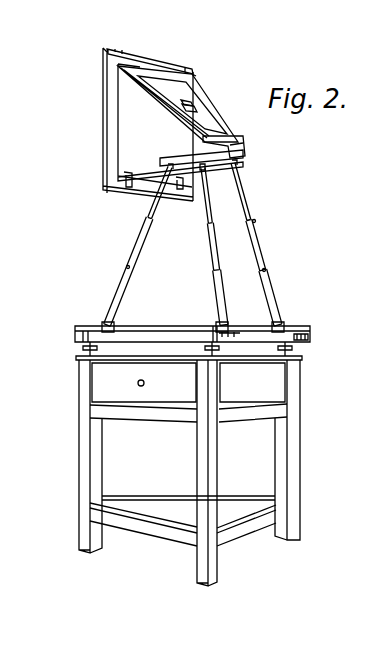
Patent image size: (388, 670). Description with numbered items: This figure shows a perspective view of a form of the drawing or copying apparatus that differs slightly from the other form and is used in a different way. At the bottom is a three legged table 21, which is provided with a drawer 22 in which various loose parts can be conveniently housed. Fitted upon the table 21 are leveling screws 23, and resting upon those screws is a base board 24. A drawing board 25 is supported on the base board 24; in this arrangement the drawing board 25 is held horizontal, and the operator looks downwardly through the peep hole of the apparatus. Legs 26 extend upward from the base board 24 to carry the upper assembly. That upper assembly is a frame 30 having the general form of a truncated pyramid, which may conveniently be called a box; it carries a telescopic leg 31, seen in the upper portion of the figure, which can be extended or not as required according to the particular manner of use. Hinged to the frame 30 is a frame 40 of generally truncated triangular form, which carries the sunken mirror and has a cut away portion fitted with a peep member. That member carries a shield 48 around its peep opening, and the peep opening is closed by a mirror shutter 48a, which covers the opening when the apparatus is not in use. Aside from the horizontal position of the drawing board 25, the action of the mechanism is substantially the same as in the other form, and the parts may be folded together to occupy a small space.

The three legged table 21 is at (275, 362).
The drawer 22 is at (173, 398).
The leveling screws 23 is at (80, 348).
The base board 24 is at (285, 342).
The drawing board 25 is at (168, 327).
The tripod legs 26 is at (203, 172).
The frame 30 is at (103, 108).
The telescopic leg 31 is at (147, 60).
The frame 40 is at (152, 84).
The shield 48 is at (205, 112).
The mirror shutter 48a is at (195, 106).